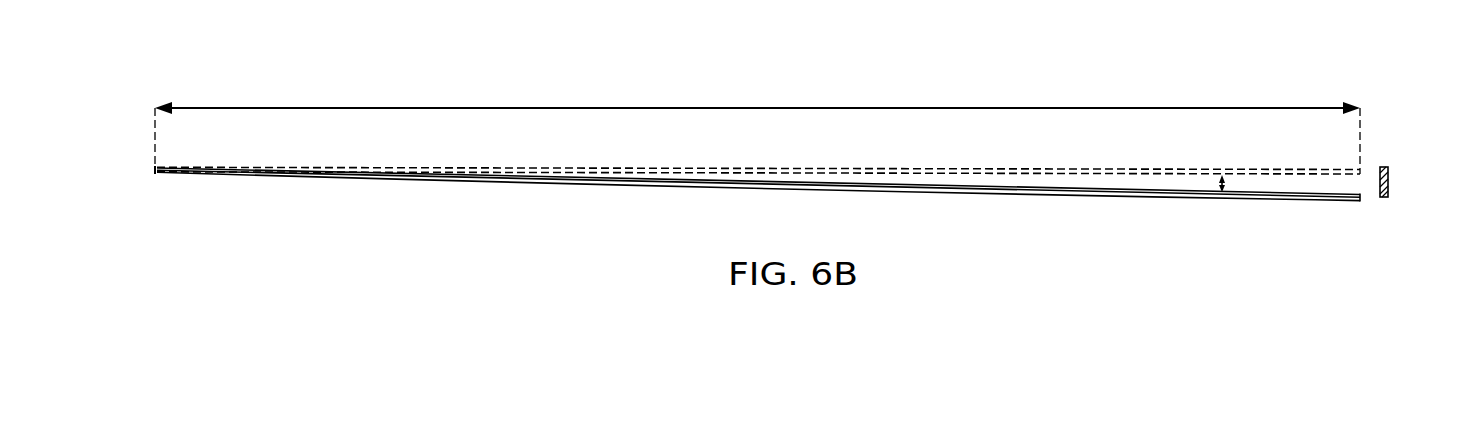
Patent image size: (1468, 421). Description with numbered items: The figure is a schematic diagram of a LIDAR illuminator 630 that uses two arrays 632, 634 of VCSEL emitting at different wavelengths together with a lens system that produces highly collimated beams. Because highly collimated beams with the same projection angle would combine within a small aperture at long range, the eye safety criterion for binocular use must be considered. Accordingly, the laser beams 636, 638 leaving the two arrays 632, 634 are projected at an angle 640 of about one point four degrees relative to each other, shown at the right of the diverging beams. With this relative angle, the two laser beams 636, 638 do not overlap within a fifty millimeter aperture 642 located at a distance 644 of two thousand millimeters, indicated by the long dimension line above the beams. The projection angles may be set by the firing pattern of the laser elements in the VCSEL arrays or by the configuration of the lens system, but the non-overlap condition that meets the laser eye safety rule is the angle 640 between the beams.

The LIDAR illuminator 630 is at (178, 35).
The first VCSEL array 632 is at (157, 168).
The second VCSEL array 634 is at (157, 172).
The first laser beam 636 is at (1118, 167).
The second laser beam 638 is at (1122, 199).
The angle 640 is at (1224, 188).
The aperture 642 is at (1388, 182).
The distance 644 is at (757, 107).